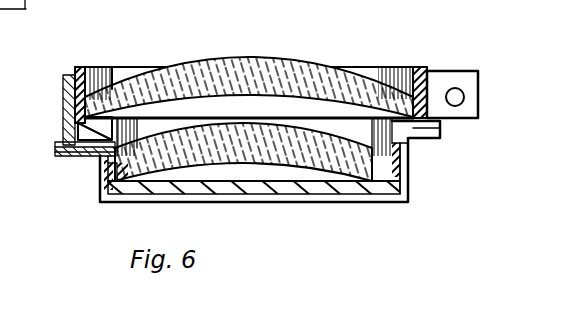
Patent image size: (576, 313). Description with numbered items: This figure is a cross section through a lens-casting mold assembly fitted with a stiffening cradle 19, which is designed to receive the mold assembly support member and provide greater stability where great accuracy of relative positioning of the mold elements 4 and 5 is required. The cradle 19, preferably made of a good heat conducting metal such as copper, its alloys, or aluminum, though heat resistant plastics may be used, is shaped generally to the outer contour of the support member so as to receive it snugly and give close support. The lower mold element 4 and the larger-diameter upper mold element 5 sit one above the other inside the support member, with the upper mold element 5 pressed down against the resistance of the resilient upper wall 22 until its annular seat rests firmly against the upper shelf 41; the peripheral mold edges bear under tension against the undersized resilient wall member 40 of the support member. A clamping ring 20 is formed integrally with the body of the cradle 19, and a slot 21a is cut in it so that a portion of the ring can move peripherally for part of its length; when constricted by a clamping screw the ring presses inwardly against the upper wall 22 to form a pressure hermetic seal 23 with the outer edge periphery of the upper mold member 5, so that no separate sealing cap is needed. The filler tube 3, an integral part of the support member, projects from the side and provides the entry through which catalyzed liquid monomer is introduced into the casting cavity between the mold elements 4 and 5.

The filler tube 3 is at (82, 158).
The lower mold element 4 is at (264, 152).
The upper mold element 5 is at (277, 54).
The stiffening cradle 19 is at (346, 195).
The clamping ring 20 is at (453, 68).
The slot 21a is at (440, 121).
The upper wall 22 is at (86, 67).
The pressure hermetic seal 23 is at (77, 114).
The resilient wall member 40 is at (70, 74).
The upper shelf 41 is at (410, 138).